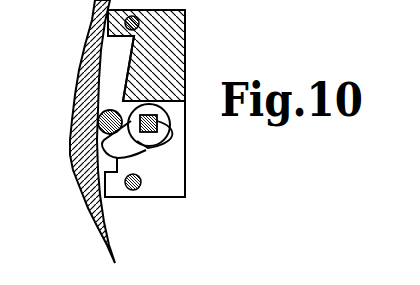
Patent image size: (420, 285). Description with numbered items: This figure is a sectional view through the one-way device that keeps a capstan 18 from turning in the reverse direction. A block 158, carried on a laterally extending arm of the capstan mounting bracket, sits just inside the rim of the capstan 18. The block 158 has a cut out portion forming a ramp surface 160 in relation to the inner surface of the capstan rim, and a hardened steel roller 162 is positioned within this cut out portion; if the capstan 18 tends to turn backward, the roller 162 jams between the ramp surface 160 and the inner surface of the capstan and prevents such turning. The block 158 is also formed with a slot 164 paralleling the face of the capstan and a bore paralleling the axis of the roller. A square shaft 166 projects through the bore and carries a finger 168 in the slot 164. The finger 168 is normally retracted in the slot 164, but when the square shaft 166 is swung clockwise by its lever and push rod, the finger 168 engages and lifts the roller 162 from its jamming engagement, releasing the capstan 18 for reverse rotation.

The capstan 18 is at (92, 62).
The block 158 is at (168, 65).
The ramp surface 160 is at (130, 57).
The hardened steel roller 162 is at (99, 118).
The slot 164 is at (163, 188).
The square shaft 166 is at (172, 135).
The finger 168 is at (146, 150).